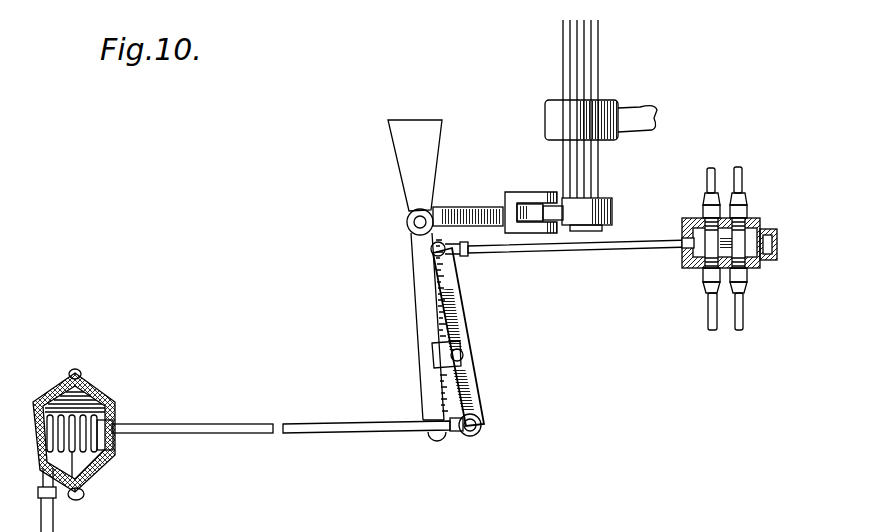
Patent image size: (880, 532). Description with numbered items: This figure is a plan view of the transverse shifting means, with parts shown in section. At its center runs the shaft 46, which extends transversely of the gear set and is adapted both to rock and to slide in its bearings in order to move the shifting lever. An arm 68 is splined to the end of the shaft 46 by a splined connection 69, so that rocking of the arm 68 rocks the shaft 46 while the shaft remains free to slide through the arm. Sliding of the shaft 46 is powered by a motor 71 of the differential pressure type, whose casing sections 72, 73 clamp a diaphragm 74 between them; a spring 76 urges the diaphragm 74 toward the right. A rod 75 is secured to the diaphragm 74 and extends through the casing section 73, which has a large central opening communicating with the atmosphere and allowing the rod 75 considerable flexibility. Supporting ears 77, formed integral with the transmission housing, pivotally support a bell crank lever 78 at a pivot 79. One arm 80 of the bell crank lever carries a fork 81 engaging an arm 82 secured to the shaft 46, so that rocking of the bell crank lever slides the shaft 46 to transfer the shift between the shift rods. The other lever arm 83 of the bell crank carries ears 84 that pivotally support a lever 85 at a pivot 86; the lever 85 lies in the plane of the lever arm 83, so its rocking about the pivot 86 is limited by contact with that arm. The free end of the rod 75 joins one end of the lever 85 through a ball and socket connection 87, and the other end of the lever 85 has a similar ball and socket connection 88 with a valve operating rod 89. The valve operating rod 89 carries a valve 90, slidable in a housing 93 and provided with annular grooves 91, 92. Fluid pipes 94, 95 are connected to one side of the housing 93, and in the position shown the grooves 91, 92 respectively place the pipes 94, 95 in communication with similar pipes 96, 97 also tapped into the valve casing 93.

The shaft 46 is at (598, 88).
The arm 68 is at (657, 113).
The splined connection 69 is at (600, 168).
The motor 71 is at (101, 388).
The casing section 72 is at (44, 394).
The casing section 73 is at (118, 402).
The diaphragm 74 is at (97, 478).
The rod 75 is at (213, 424).
The spring 76 is at (63, 395).
The supporting ears 77 is at (408, 178).
The bell crank lever 78 is at (404, 269).
The pivot 79 is at (407, 223).
The arm 80 is at (472, 206).
The fork 81 is at (525, 198).
The arm 82 is at (546, 232).
The lever arm 83 is at (420, 305).
The ears 84 is at (436, 353).
The lever 85 is at (462, 319).
The pivot 86 is at (465, 354).
The ball and socket connection 87 is at (479, 414).
The ball and socket connection 88 is at (444, 255).
The valve operating rod 89 is at (600, 246).
The valve 90 is at (683, 234).
The annular groove 91 is at (691, 269).
The annular groove 92 is at (758, 262).
The housing 93 is at (770, 219).
The fluid pipe 94 is at (708, 318).
The fluid pipe 95 is at (745, 312).
The pipe 96 is at (707, 178).
The pipe 97 is at (741, 180).